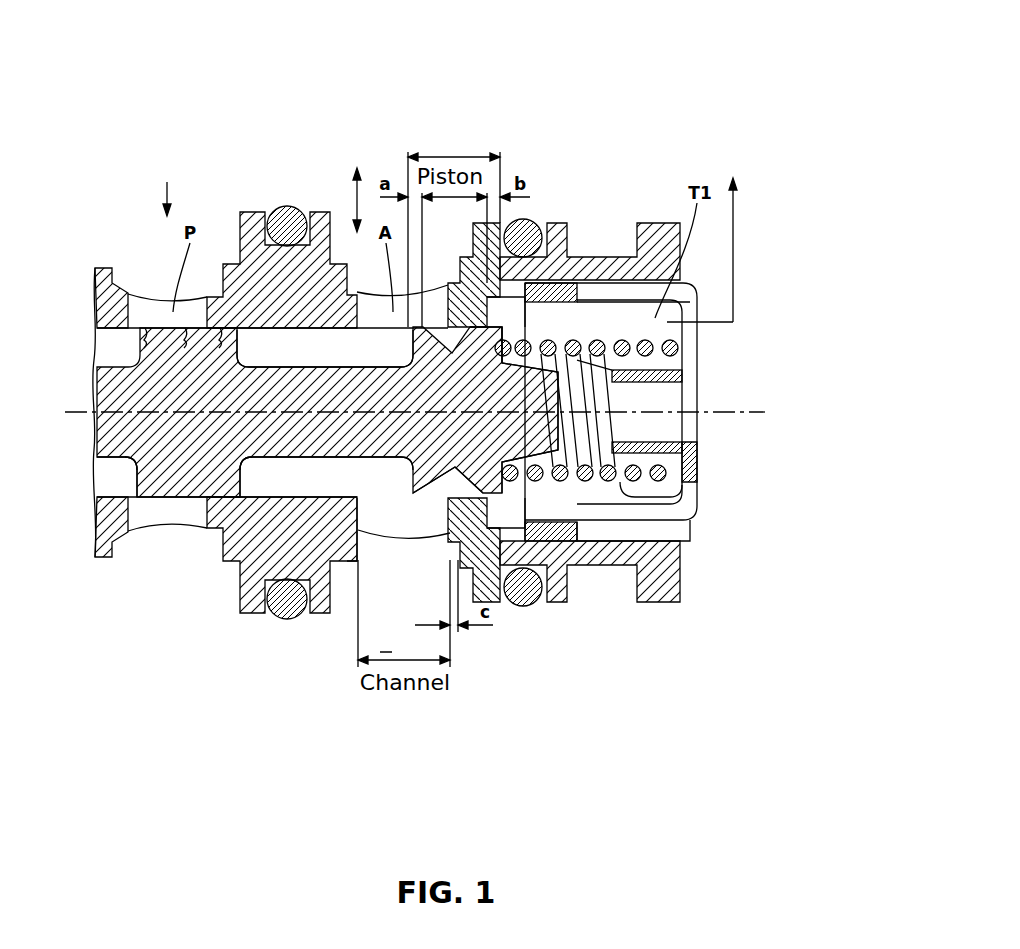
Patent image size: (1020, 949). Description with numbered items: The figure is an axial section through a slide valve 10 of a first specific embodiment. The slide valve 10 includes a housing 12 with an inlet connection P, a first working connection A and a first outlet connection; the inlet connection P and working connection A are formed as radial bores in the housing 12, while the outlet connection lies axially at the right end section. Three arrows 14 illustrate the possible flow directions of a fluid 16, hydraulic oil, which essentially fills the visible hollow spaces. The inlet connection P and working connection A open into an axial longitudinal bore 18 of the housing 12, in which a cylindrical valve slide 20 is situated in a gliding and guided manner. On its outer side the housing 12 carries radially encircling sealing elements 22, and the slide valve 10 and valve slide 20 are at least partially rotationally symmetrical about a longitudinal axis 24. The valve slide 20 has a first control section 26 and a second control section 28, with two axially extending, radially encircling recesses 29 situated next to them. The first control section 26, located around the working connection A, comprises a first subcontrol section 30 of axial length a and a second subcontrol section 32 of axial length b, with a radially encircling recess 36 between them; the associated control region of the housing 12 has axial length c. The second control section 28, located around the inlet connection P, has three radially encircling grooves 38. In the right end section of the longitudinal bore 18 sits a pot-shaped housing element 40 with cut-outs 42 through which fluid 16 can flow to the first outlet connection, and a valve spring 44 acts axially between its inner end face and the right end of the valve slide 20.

The slide valve 10 is at (612, 107).
The housing 12 is at (650, 243).
The arrows 14 is at (735, 175).
The fluid 16 is at (255, 552).
The axial longitudinal bore 18 is at (338, 562).
The valve slide 20 is at (172, 468).
The sealing elements 22 is at (528, 228).
The longitudinal axis 24 is at (732, 410).
The first control section 26 is at (407, 450).
The second control section 28 is at (240, 443).
The recesses 29 is at (252, 482).
The first subcontrol section 30 is at (413, 350).
The second subcontrol section 32 is at (482, 350).
The recess 36 is at (450, 482).
The grooves 38 is at (226, 345).
The housing element 40 is at (655, 445).
The cut-outs 42 is at (620, 530).
The valve spring 44 is at (687, 500).